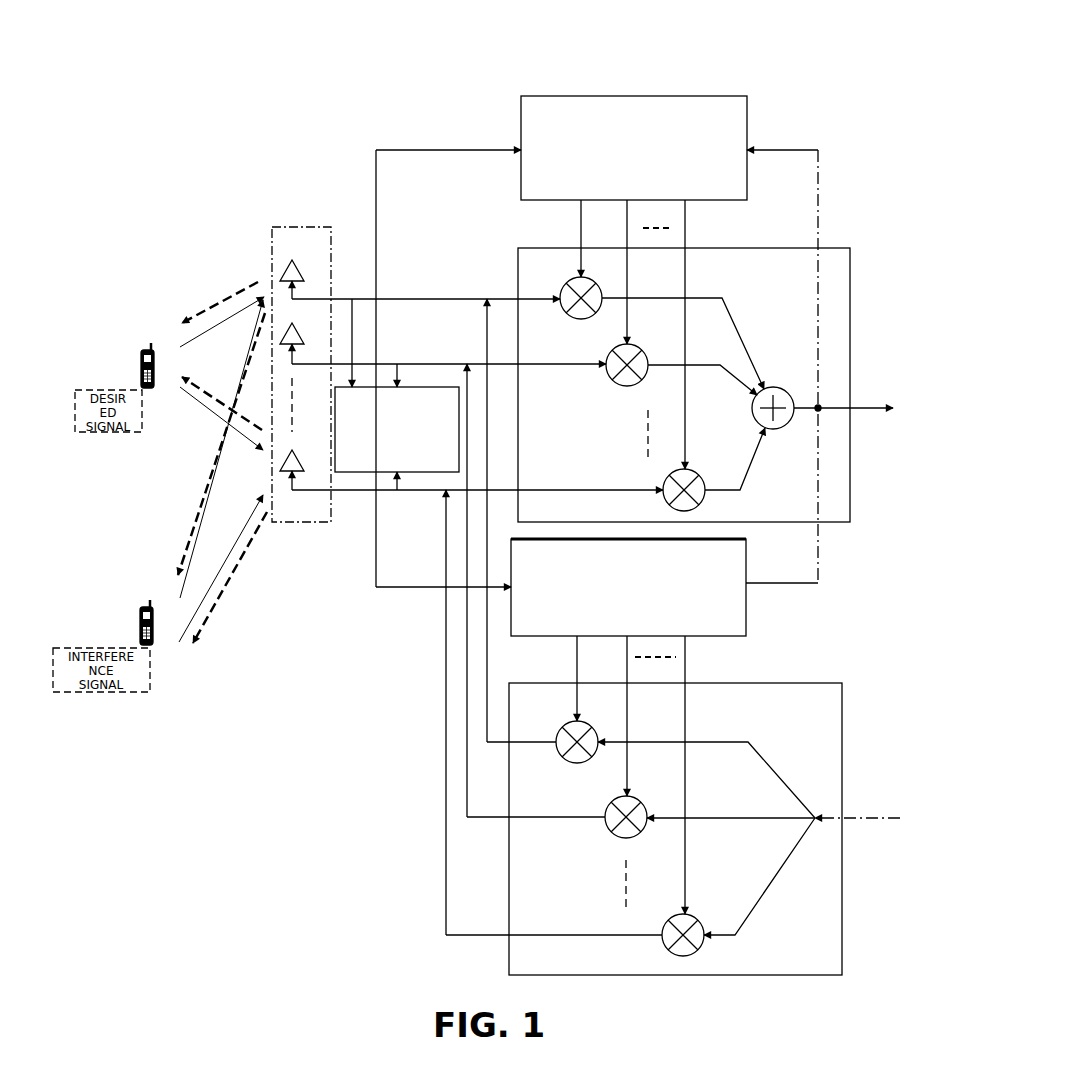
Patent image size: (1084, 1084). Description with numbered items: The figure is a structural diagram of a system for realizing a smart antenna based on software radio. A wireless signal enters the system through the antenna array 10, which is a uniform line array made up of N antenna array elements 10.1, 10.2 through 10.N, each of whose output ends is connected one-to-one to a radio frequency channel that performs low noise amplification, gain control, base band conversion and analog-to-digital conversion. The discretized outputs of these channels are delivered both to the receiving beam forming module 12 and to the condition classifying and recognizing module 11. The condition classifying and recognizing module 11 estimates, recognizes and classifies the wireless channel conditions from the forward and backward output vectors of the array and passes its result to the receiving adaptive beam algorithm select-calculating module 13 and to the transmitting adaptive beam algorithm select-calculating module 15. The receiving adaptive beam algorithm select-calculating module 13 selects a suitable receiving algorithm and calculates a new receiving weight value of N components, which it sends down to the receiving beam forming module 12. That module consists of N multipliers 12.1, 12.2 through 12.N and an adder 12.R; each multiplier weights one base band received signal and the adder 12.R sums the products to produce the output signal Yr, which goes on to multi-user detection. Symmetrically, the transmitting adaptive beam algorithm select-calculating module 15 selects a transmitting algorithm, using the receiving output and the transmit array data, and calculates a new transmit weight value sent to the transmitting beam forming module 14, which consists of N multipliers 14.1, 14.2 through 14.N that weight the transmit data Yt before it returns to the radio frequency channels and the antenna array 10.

The antenna array 10 is at (281, 335).
The antenna array element 10.1 is at (302, 279).
The antenna array element 10.2 is at (302, 343).
The antenna array element 10.N is at (302, 470).
The condition classifying and recognizing module 11 is at (358, 478).
The receiving beam forming module 12 is at (680, 358).
The multiplier 12.1 is at (645, 333).
The multiplier 12.2 is at (665, 367).
The multiplier 12.N is at (695, 469).
The adder 12.R is at (805, 417).
The receiving adaptive beam algorithm select-calculating module 13 is at (633, 93).
The transmitting beam forming module 14 is at (710, 805).
The multiplier 14.1 is at (671, 762).
The multiplier 14.2 is at (693, 815).
The multiplier 14.N is at (724, 887).
The transmitting adaptive beam algorithm select-calculating module 15 is at (747, 607).